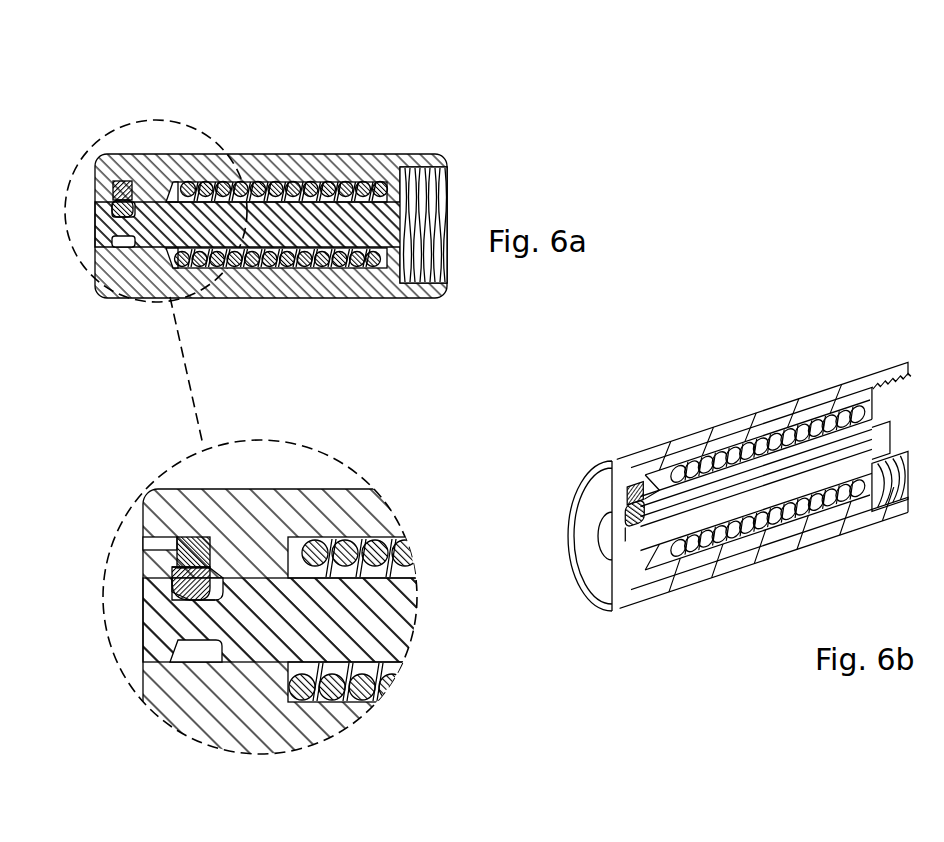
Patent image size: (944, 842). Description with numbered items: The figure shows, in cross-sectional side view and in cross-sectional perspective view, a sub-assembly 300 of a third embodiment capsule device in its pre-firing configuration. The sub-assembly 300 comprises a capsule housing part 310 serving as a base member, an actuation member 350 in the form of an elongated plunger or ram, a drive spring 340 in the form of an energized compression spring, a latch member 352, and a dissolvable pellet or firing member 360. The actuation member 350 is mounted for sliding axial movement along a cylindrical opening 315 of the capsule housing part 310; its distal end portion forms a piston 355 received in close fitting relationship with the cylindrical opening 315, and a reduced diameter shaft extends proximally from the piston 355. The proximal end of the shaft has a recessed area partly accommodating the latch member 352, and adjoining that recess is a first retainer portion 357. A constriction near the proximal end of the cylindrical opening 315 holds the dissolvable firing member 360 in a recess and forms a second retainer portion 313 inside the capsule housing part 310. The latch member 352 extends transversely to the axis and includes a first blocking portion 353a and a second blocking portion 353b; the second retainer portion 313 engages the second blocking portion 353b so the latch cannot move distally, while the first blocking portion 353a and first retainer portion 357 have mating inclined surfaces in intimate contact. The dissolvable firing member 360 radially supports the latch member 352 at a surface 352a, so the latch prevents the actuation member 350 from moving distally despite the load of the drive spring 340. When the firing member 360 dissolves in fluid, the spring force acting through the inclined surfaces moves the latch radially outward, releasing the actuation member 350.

In FIG. 6a, the sub-assembly 300 is at (280, 399).
In FIG. 6b, the sub-assembly 300 is at (711, 490).
In FIG. 6a, the capsule housing part 310 is at (293, 440).
In FIG. 6b, the capsule housing part 310 is at (745, 465).
In FIG. 6a, the second retainer portion 313 is at (310, 493).
In FIG. 6b, the second retainer portion 313 is at (697, 441).
In FIG. 6a, the cylindrical opening 315 is at (312, 391).
In FIG. 6a, the drive spring 340 is at (297, 442).
In FIG. 6b, the drive spring 340 is at (768, 450).
In FIG. 6a, the actuation member 350 is at (322, 440).
In FIG. 6b, the actuation member 350 is at (772, 518).
In FIG. 6a, the latch member 352 is at (110, 384).
In FIG. 6b, the latch member 352 is at (572, 502).
In FIG. 6a, the surface of latch member 352a is at (244, 474).
In FIG. 6a, the first blocking portion 353a is at (102, 631).
In FIG. 6a, the second blocking portion 353b is at (144, 686).
In FIG. 6a, the piston 355 is at (465, 221).
In FIG. 6a, the first retainer portion 357 is at (95, 604).
In FIG. 6b, the first retainer portion 357 is at (565, 567).
In FIG. 6a, the dissolvable firing member 360 is at (125, 329).
In FIG. 6b, the dissolvable firing member 360 is at (598, 461).